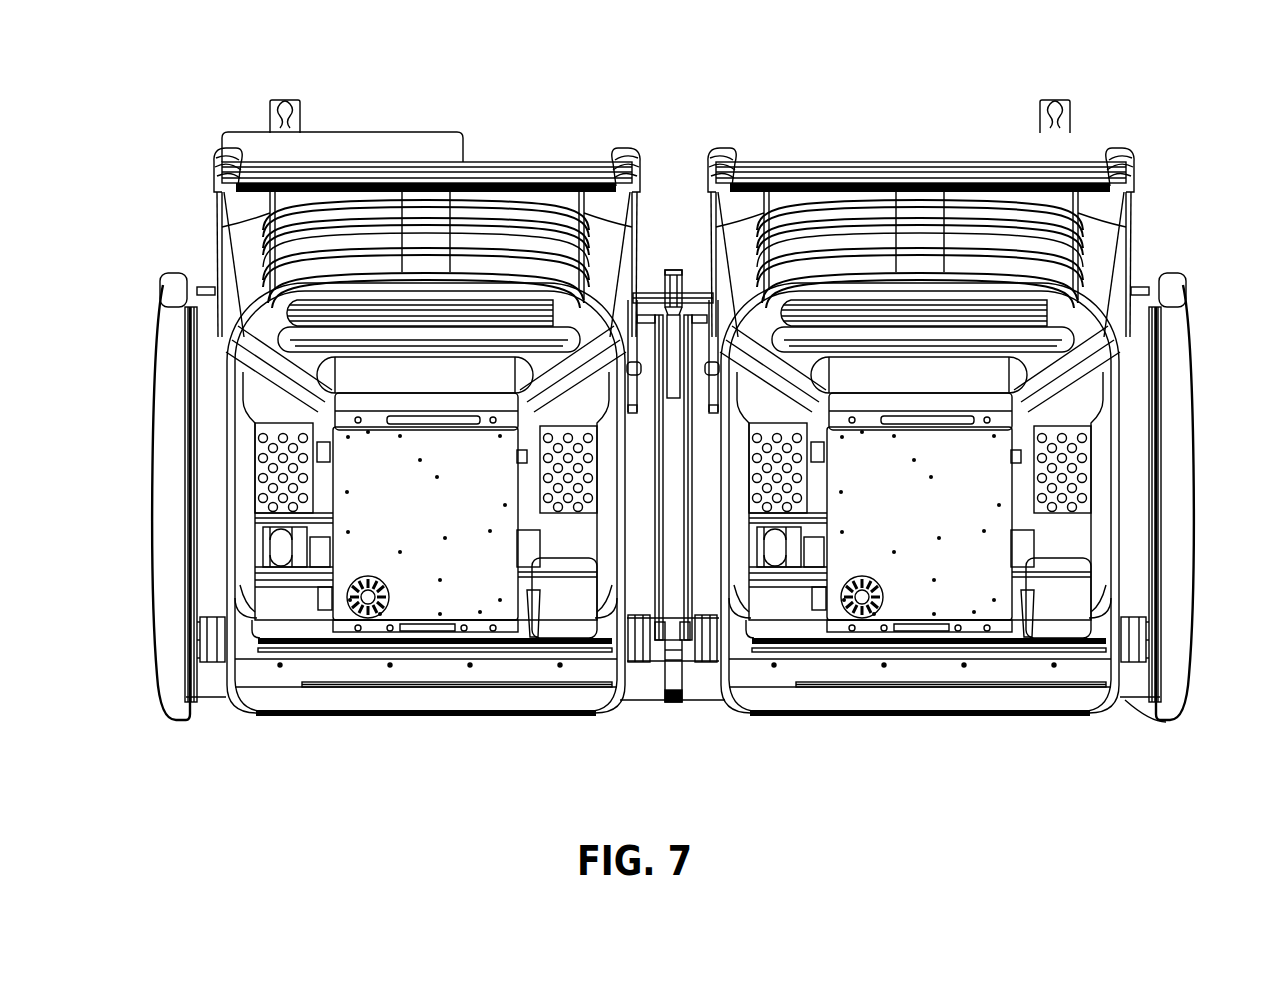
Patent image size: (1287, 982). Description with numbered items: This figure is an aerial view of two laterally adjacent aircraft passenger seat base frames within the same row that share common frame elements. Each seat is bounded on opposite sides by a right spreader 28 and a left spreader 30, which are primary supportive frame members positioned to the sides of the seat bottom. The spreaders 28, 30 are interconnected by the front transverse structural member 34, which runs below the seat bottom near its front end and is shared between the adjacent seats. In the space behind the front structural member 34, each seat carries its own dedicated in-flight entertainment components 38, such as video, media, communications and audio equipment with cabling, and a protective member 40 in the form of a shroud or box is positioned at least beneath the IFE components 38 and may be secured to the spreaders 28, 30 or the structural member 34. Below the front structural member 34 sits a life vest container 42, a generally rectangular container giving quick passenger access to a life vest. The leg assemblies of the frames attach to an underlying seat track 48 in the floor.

The right spreader 28 is at (1178, 368).
The left spreader 30 is at (185, 348).
The front transverse structural member 34 is at (1150, 703).
The in-flight entertainment components 38 is at (430, 598).
The protective member 40 is at (213, 522).
The life vest container 42 is at (483, 705).
The seat track 48 is at (300, 100).